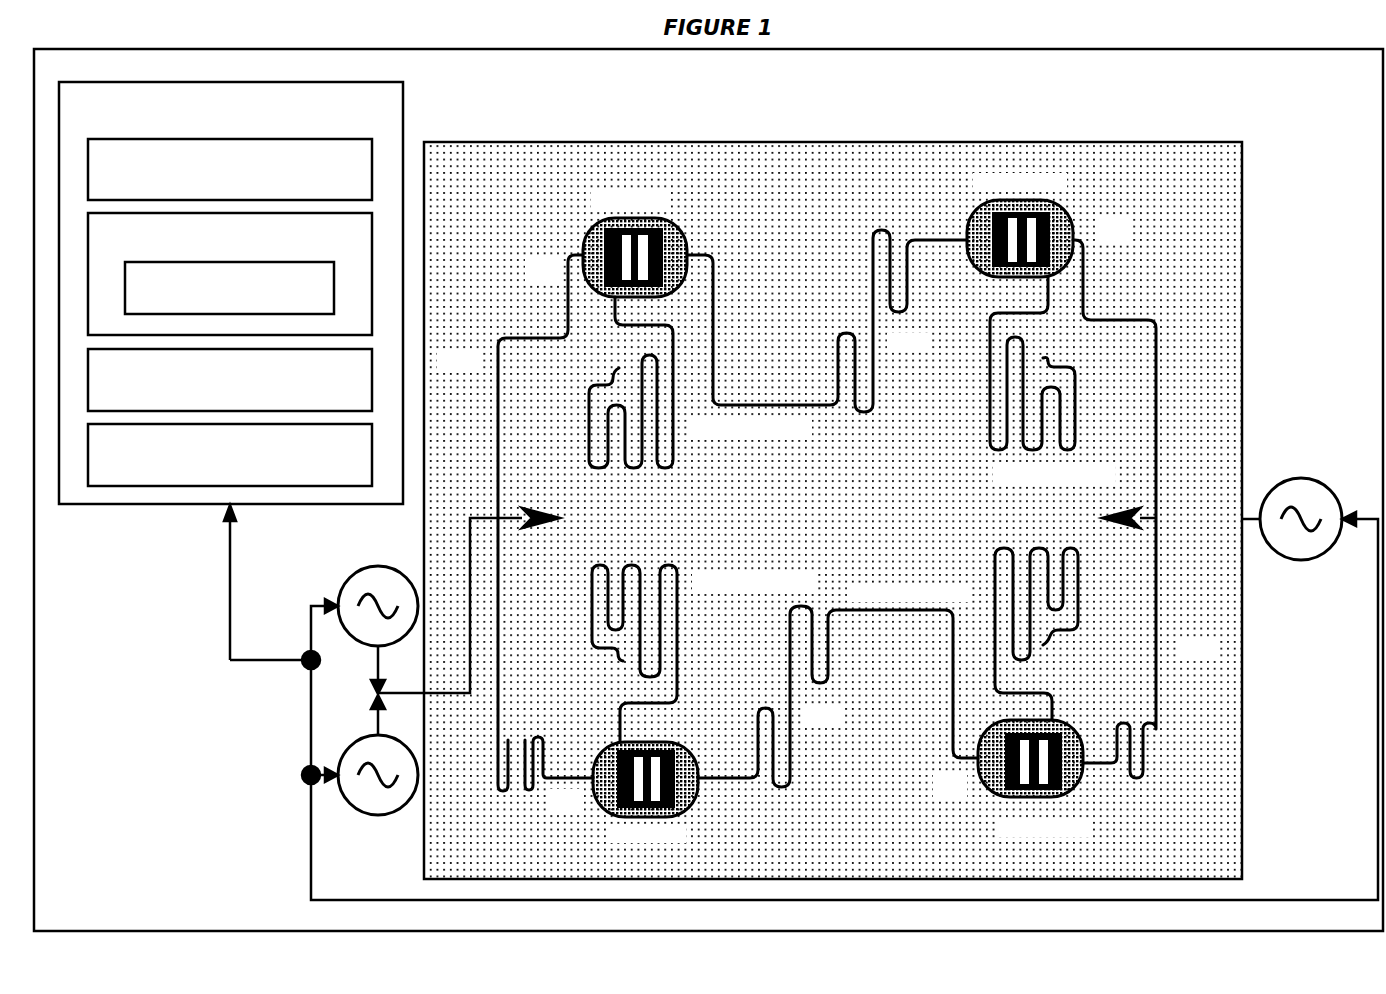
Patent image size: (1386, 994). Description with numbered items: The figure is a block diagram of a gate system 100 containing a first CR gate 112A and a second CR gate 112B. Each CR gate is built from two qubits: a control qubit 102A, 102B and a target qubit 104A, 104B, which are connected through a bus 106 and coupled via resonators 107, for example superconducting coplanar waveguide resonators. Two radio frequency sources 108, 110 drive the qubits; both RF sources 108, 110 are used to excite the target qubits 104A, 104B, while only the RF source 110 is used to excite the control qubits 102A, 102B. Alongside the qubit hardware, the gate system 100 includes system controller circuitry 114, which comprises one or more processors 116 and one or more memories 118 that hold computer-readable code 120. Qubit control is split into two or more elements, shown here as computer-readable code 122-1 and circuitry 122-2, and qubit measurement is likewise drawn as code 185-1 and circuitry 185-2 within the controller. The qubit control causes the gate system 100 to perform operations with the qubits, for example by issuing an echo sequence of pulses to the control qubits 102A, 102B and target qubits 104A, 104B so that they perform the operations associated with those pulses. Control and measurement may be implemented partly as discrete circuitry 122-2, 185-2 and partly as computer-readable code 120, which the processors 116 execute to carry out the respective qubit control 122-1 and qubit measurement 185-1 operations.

The gate system 100 is at (705, 87).
The control qubit 102A is at (1083, 776).
The control qubit 102B is at (1073, 211).
The target qubit 104A is at (687, 745).
The target qubit 104B is at (583, 241).
The bus 106 is at (528, 313).
The resonator 107 is at (697, 461).
The RF source 108 is at (348, 579).
The RF source 110 is at (372, 816).
The first CR gate 112A is at (944, 820).
The second CR gate 112B is at (810, 450).
The system controller circuitry 114 is at (217, 131).
The processor 116 is at (217, 191).
The memory 118 is at (285, 248).
The computer-readable code 120 is at (229, 288).
The qubit control CRC 122-1 is at (229, 288).
The qubit control circuitry 122-2 is at (208, 402).
The qubit measurement code 185-1 is at (205, 287).
The qubit measurement 185-2 is at (208, 477).